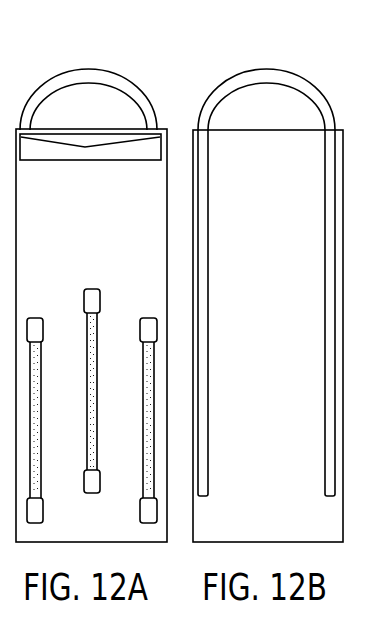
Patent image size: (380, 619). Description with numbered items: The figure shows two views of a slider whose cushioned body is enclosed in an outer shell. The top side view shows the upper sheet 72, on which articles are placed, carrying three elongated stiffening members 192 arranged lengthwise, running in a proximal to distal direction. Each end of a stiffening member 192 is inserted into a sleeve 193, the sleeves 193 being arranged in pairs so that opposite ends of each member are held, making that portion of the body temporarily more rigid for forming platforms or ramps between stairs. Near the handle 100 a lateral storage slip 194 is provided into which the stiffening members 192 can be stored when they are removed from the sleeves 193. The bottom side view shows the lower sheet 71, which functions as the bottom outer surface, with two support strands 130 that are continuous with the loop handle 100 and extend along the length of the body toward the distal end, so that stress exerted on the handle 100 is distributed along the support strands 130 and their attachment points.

In FIG. 12B, the lower sheet 71 is at (272, 398).
In FIG. 12A, the upper sheet 72 is at (95, 236).
In FIG. 12B, the handle 100 is at (290, 82).
In FIG. 12B, the support strand 130 is at (325, 227).
In FIG. 12A, the stiffening member 192 is at (90, 333).
In FIG. 12A, the sleeve 193 is at (147, 320).
In FIG. 12A, the storage slip 194 is at (112, 160).